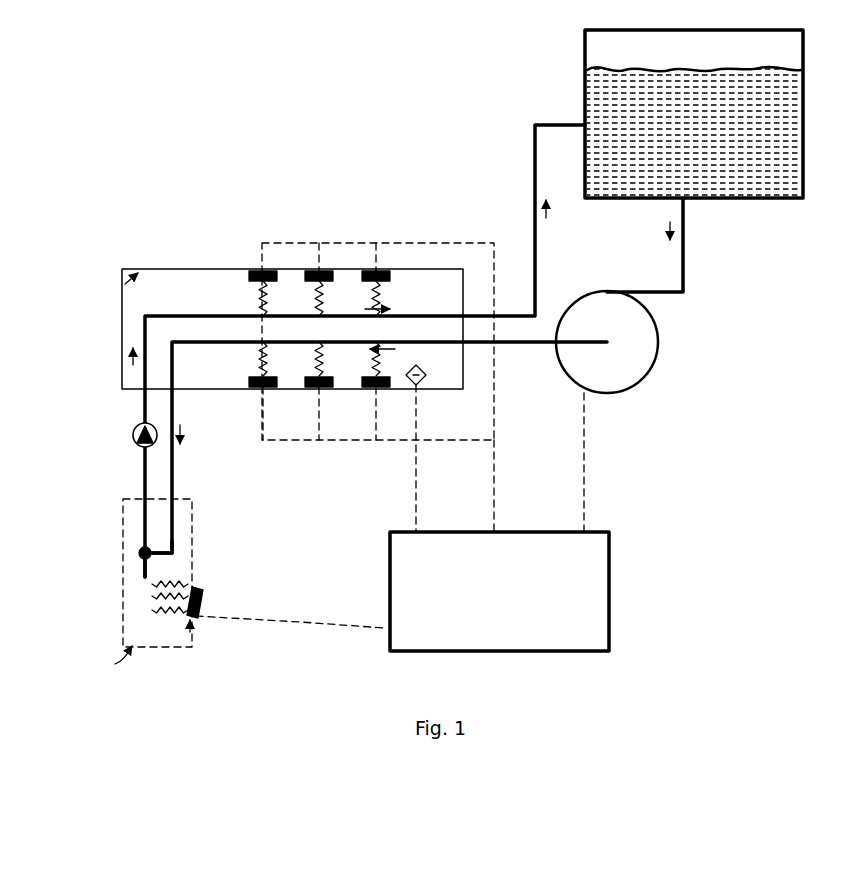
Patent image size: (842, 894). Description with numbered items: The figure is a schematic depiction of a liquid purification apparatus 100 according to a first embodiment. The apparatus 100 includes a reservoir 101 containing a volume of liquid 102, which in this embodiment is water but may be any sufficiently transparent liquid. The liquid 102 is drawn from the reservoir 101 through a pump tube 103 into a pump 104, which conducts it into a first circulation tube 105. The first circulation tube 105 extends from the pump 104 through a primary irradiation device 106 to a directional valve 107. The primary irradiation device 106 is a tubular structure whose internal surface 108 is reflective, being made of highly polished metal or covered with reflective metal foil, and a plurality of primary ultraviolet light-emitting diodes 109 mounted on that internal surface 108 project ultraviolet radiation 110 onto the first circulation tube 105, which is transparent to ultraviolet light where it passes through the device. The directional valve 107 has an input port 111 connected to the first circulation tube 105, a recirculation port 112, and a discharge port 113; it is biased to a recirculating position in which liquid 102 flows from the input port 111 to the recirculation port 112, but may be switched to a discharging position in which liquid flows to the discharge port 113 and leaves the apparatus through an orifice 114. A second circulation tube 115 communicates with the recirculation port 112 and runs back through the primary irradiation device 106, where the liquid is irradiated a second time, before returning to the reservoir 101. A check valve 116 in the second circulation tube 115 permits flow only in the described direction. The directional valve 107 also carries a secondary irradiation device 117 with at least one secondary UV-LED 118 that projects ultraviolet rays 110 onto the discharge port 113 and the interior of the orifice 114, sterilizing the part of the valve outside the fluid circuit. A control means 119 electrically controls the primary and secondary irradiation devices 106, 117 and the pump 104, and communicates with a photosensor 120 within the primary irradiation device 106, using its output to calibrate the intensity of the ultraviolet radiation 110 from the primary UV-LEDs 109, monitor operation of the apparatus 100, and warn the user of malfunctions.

The liquid purification apparatus 100 is at (204, 735).
The reservoir 101 is at (585, 45).
The liquid 102 is at (715, 132).
The pump tube 103 is at (683, 244).
The pump 104 is at (658, 357).
The first circulation tube 105 is at (530, 355).
The primary irradiation device 106 is at (122, 300).
The directional valve 107 is at (123, 604).
The internal surface 108 is at (122, 276).
The primary ultraviolet light-emitting diodes 109 is at (263, 268).
The ultraviolet radiation 110 is at (258, 296).
The input port 111 is at (180, 558).
The recirculation port 112 is at (140, 542).
The discharge port 113 is at (140, 570).
The orifice 114 is at (115, 664).
The second circulation tube 115 is at (535, 150).
The check valve 116 is at (133, 432).
The secondary irradiation device 117 is at (200, 602).
The secondary UV-LED 118 is at (195, 632).
The control means 119 is at (609, 592).
The photosensor 120 is at (399, 392).